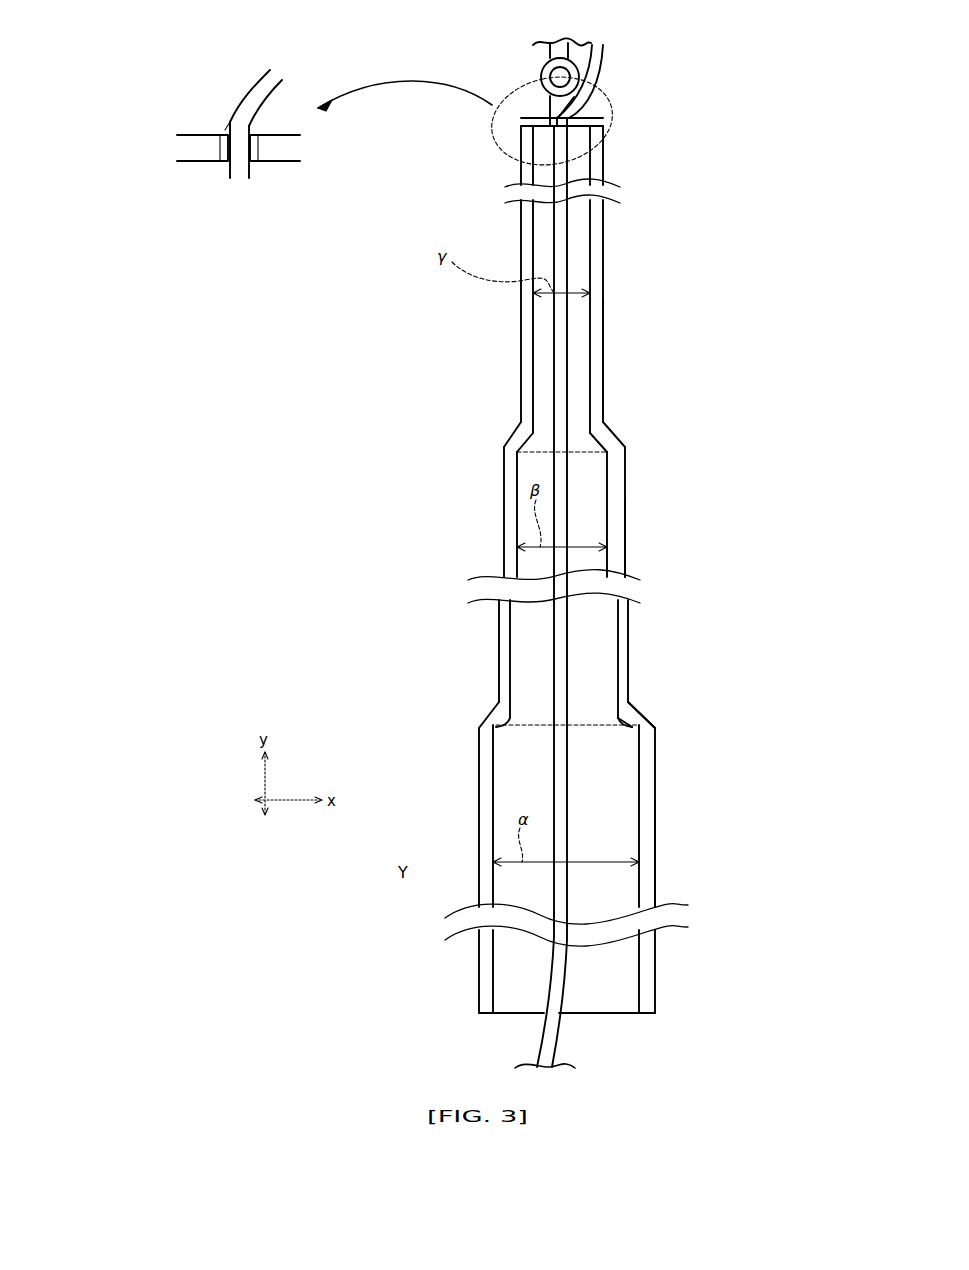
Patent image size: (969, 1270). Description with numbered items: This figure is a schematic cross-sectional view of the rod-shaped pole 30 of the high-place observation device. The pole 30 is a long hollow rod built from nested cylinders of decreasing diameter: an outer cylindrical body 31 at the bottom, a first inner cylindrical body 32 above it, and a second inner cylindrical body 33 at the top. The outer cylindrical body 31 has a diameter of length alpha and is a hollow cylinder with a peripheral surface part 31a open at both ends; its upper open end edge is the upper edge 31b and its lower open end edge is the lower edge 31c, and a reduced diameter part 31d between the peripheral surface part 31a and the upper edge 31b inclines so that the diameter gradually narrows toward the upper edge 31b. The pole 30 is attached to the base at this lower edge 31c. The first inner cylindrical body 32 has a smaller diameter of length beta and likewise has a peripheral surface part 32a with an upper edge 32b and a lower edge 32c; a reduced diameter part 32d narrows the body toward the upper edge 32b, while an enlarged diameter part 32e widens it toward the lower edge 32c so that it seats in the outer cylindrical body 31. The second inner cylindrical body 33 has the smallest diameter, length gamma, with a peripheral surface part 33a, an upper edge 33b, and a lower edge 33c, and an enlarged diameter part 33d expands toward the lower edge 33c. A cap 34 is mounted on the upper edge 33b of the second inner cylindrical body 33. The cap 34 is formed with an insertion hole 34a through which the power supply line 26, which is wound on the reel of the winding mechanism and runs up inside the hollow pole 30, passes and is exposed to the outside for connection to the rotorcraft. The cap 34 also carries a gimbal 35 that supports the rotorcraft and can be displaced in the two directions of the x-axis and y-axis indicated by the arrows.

The power supply line 26 is at (556, 140).
The pole 30 is at (652, 247).
The outer cylindrical body 31 is at (664, 800).
The peripheral surface part 31a is at (654, 846).
The upper edge 31b is at (628, 705).
The lower edge 31c is at (648, 1014).
The reduced diameter part 31d is at (656, 727).
The first inner cylindrical body 32 is at (630, 500).
The peripheral surface part 32a is at (627, 545).
The upper edge 32b is at (608, 436).
The lower edge 32c is at (496, 733).
The reduced diameter part 32d is at (626, 447).
The enlarged diameter part 32e is at (500, 712).
The second inner cylindrical body 33 is at (618, 332).
The peripheral surface part 33a is at (604, 368).
The upper edge 33b is at (580, 140).
The lower edge 33c is at (512, 453).
The enlarged diameter part 33d is at (512, 440).
The cap 34 is at (545, 112).
The insertion hole 34a is at (552, 100).
The gimbal 35 is at (548, 71).